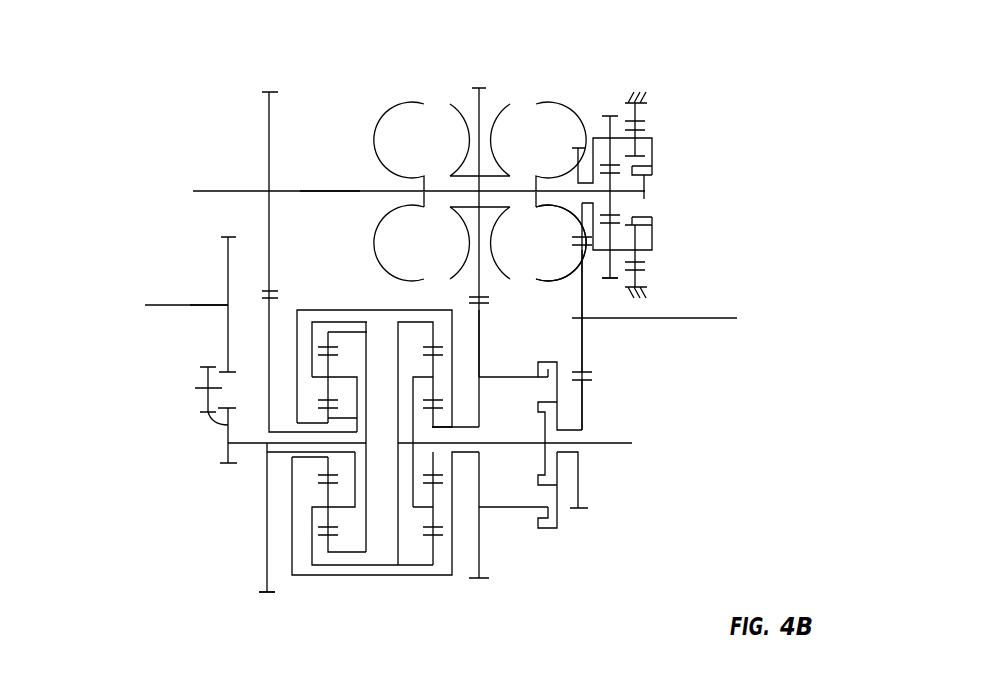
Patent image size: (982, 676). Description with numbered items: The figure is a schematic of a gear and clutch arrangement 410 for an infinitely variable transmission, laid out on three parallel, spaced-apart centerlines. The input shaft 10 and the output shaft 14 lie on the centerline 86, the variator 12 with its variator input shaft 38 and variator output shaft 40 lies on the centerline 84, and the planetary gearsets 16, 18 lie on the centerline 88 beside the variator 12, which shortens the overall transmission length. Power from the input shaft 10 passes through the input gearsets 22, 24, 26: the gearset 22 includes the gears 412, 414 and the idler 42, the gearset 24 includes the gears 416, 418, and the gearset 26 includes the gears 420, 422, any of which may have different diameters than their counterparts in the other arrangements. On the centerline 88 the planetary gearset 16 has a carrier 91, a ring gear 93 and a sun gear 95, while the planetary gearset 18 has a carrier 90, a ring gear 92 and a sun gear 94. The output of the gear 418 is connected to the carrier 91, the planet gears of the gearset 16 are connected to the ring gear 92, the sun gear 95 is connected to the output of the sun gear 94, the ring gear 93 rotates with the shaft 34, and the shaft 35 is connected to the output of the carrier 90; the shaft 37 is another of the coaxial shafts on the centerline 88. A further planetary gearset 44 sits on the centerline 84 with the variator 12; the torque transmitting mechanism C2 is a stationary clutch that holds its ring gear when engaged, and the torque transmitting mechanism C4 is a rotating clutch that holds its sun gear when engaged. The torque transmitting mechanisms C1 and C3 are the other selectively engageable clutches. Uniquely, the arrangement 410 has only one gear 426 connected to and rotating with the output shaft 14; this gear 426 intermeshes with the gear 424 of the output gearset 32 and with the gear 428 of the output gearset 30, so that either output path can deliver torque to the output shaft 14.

The gear and clutch arrangement 410 is at (104, 111).
The centerline 84 is at (186, 190).
The variator input shaft 38 is at (330, 190).
The centerline 86 is at (137, 303).
The input shaft 10 is at (207, 305).
The gear 412 is at (229, 274).
The gear 416 is at (272, 240).
The idler 42 is at (199, 423).
The shaft 34 is at (252, 441).
The gear 414 is at (229, 456).
The input gearset 22 is at (233, 471).
The gear 418 is at (267, 519).
The input gearset 24 is at (262, 598).
The centerline 88 is at (606, 441).
The ring gear 93 is at (368, 357).
The carrier 91 is at (350, 373).
The sun gear 95 is at (336, 418).
The ring gear 92 is at (432, 340).
The carrier 90 is at (412, 410).
The sun gear 94 is at (436, 421).
The planetary gearset 16 is at (332, 580).
The planetary gearset 18 is at (410, 582).
The input gearset 26 is at (478, 588).
The gear 420 is at (481, 282).
The gear 422 is at (482, 350).
The variator 12 is at (529, 91).
The variator output shaft 40 is at (497, 201).
The output gearset 32 is at (573, 142).
The torque transmitting mechanism C4 is at (645, 148).
The gear 424 is at (581, 228).
The torque transmitting mechanism C2 is at (647, 260).
The planetary gearset 44 is at (611, 282).
The gear 426 is at (580, 277).
The output shaft 14 is at (698, 318).
The shaft 37 is at (518, 375).
The torque transmitting mechanism C3 is at (546, 368).
The gear 428 is at (582, 388).
The shaft 35 is at (493, 442).
The torque transmitting mechanism C1 is at (538, 462).
The output gearset 30 is at (582, 518).